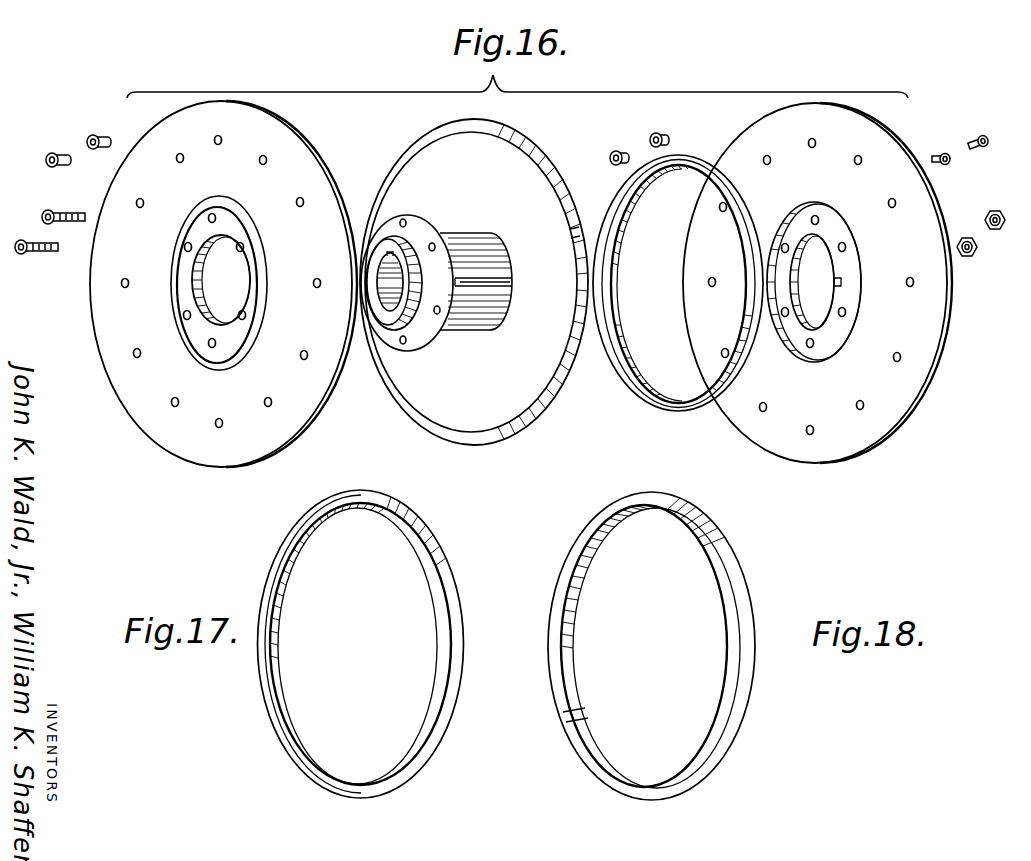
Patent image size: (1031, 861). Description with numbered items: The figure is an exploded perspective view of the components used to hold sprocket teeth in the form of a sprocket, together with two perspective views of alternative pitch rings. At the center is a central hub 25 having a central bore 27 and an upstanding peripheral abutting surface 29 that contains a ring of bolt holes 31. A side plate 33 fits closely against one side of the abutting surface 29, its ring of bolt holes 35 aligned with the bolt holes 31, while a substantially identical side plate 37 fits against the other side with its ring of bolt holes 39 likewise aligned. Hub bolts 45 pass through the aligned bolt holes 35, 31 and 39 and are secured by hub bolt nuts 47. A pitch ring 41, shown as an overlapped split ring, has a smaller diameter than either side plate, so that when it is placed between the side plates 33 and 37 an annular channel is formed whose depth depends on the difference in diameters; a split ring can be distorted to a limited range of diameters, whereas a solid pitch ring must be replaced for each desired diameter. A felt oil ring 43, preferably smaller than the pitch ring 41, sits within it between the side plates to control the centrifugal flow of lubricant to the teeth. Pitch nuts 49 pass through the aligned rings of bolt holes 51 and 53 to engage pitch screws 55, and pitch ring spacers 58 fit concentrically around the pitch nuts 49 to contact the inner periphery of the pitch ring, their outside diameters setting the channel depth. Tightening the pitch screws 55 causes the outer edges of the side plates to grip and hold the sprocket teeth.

In FIG. 16, the central hub 25 is at (430, 286).
In FIG. 16, the central bore 27 is at (390, 281).
In FIG. 16, the upstanding peripheral abutting surface 29 is at (425, 328).
In FIG. 16, the ring of bolt holes 31 is at (406, 221).
In FIG. 16, the side plate 33 is at (151, 388).
In FIG. 16, the ring of bolt holes 35 is at (184, 315).
In FIG. 16, the side plate 37 is at (817, 299).
In FIG. 16, the ring of bolt holes 39 is at (810, 349).
In FIG. 16, the pitch ring 41 is at (507, 442).
In FIG. 17, the pitch ring 41 is at (443, 561).
In FIG. 18, the pitch ring 41 is at (577, 543).
In FIG. 16, the felt oil ring 43 is at (632, 387).
In FIG. 16, the hub bolts 45 is at (85, 222).
In FIG. 16, the hub bolt nuts 47 is at (995, 231).
In FIG. 16, the pitch nuts 49 is at (72, 131).
In FIG. 16, the ring of bolt holes 51 is at (210, 155).
In FIG. 16, the ring of bolt holes 53 is at (890, 202).
In FIG. 16, the pitch screws 55 is at (977, 149).
In FIG. 16, the pitch ring spacers 58 is at (630, 134).